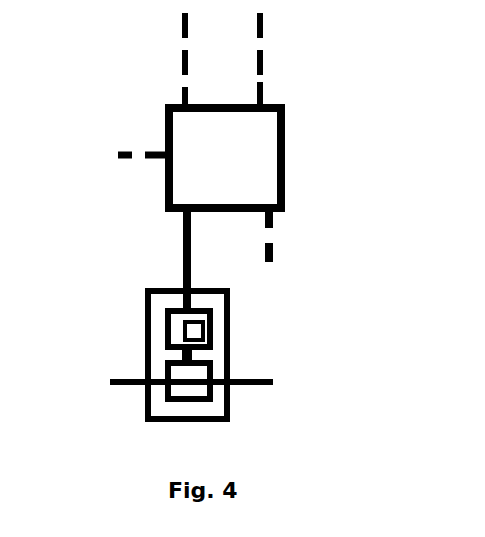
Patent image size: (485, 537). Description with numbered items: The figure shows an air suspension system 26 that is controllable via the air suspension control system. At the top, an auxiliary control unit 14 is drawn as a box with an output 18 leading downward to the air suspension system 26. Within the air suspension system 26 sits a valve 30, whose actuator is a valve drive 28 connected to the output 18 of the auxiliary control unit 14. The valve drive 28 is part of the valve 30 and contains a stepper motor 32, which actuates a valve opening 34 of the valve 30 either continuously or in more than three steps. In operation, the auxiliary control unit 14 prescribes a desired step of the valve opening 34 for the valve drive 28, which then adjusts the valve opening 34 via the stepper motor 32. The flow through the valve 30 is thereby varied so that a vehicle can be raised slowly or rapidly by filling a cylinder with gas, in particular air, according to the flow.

The auxiliary control unit 14 is at (283, 192).
The output 18 is at (182, 212).
The air suspension system 26 is at (266, 303).
The valve drive 28 is at (165, 335).
The valve 30 is at (230, 395).
The stepper motor 32 is at (205, 331).
The valve opening 34 is at (167, 393).